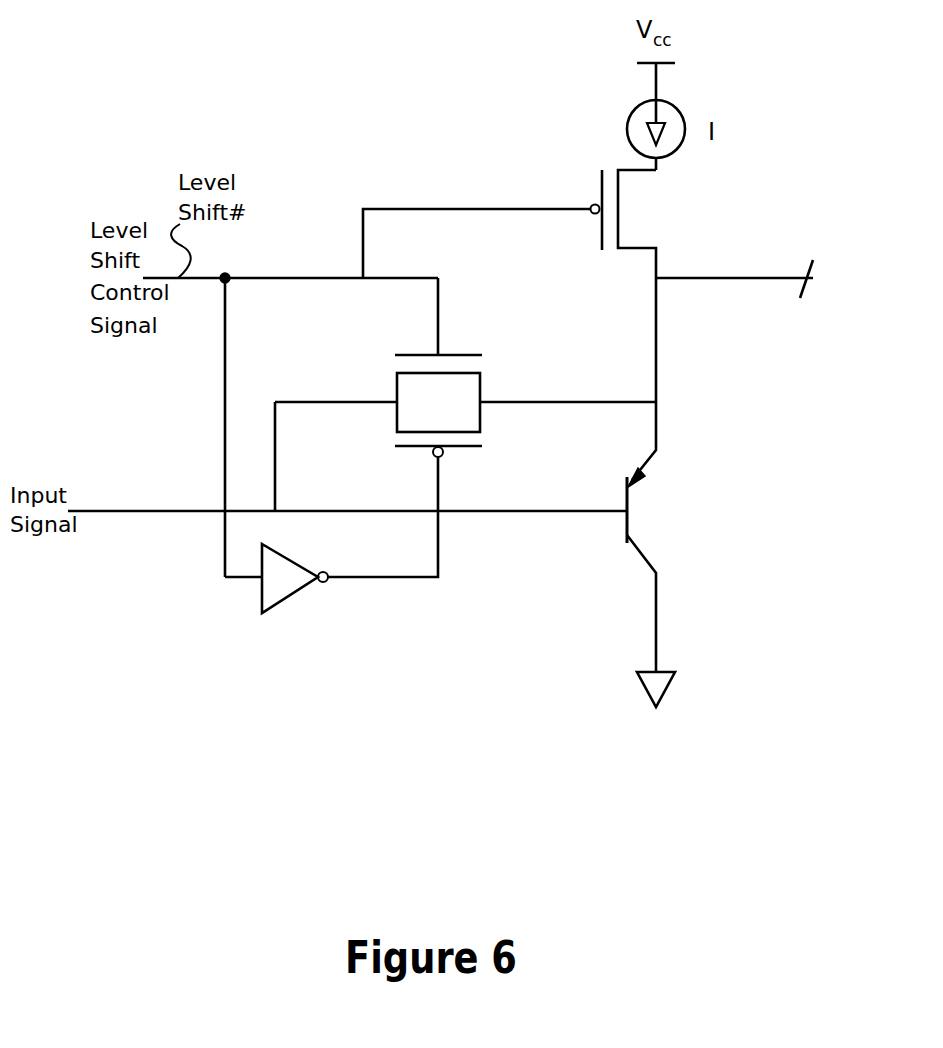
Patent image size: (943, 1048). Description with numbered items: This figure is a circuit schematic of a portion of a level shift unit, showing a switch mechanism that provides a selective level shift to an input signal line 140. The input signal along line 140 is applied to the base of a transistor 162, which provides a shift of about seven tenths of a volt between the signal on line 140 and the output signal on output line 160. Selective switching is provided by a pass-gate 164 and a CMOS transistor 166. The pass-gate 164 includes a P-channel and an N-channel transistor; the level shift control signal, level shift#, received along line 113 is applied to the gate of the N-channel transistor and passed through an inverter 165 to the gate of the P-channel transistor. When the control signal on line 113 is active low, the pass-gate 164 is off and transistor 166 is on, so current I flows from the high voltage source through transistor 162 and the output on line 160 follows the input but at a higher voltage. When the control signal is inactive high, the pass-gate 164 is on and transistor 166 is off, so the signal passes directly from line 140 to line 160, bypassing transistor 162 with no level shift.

The level shift control signal line 113 is at (233, 278).
The input signal line 140 is at (110, 511).
The output line 160 is at (697, 278).
The transistor 162 is at (652, 567).
The pass-gate 164 is at (465, 372).
The inverter 165 is at (280, 598).
The CMOS transistor 166 is at (640, 246).